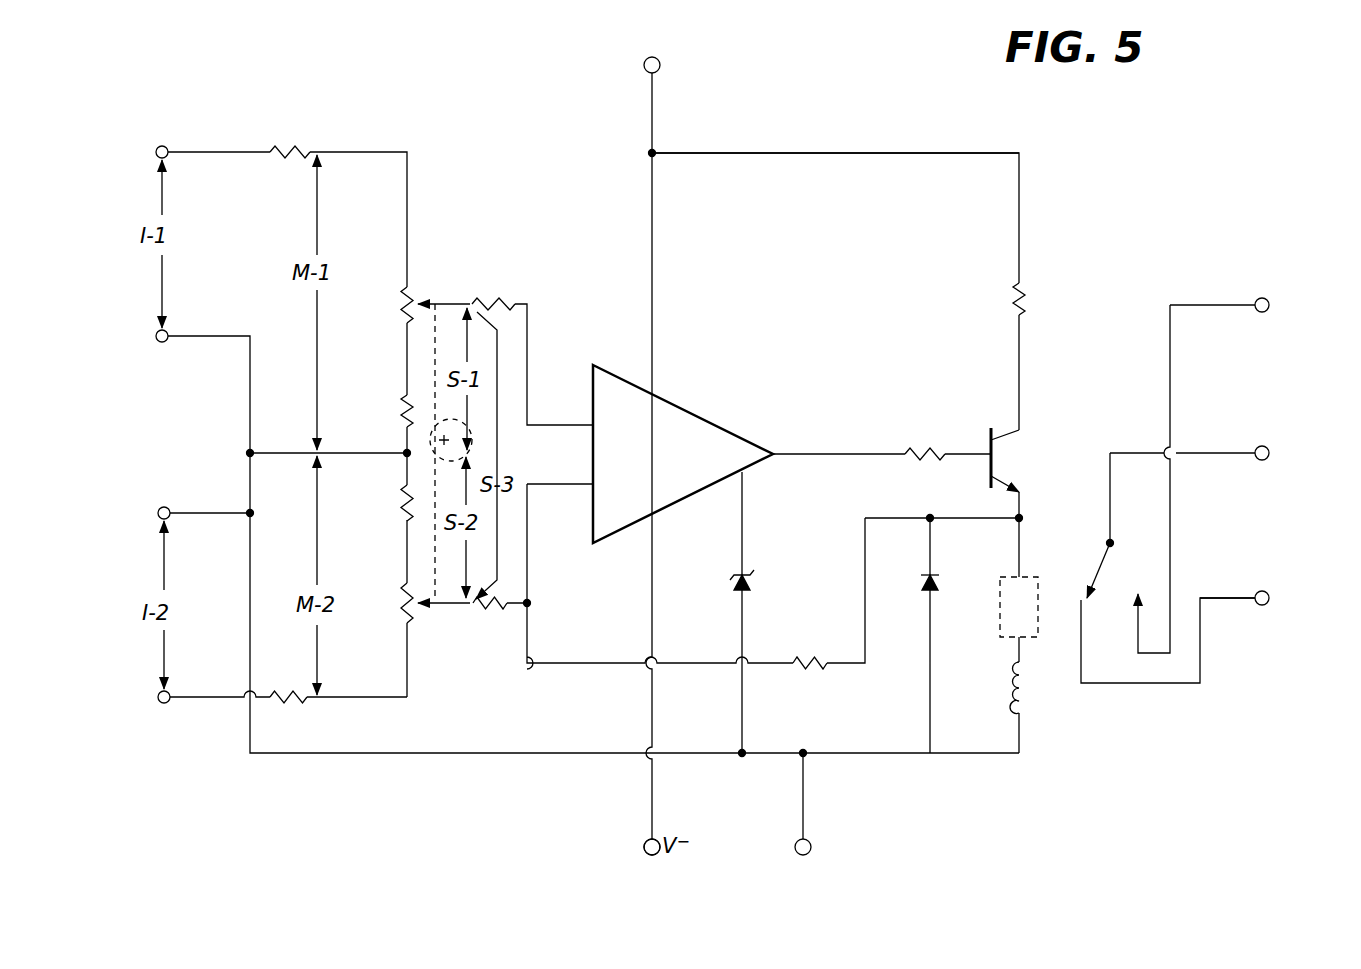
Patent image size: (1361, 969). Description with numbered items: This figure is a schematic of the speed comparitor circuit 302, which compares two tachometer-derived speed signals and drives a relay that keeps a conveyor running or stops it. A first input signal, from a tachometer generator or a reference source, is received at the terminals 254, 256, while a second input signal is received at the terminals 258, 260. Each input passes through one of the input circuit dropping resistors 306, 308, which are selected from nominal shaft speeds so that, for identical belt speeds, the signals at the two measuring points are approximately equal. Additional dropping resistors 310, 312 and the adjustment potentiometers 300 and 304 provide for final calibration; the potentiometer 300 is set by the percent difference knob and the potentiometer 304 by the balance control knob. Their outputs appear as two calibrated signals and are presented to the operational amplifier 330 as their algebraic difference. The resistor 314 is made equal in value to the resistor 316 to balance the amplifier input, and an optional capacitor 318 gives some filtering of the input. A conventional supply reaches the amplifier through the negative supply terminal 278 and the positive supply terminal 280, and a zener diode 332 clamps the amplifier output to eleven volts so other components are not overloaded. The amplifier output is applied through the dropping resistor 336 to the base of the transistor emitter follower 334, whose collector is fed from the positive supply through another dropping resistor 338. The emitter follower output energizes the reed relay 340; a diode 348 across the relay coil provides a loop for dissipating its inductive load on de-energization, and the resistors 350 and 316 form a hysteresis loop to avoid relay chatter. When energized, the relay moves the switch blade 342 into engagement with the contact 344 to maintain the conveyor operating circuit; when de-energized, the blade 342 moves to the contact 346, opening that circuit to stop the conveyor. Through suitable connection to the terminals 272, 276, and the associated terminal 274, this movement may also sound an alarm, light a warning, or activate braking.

The terminal 254 is at (155, 153).
The terminal 256 is at (155, 337).
The terminal 258 is at (157, 514).
The terminal 260 is at (157, 698).
The terminal 272 is at (1269, 306).
The terminal 274 is at (1269, 599).
The terminal 276 is at (1269, 454).
The V− terminal 278 is at (640, 867).
The V+ terminal 280 is at (662, 53).
The potentiometer 300 is at (392, 292).
The speed comparitor circuit 302 is at (811, 134).
The potentiometer 304 is at (393, 600).
The input circuit dropping resistor 306 is at (286, 148).
The input circuit dropping resistor 308 is at (298, 710).
The dropping resistor 310 is at (400, 411).
The dropping resistor 312 is at (402, 499).
The resistor 314 is at (481, 302).
The resistor 316 is at (505, 606).
The capacitor 318 is at (474, 440).
The operational amplifier 330 is at (733, 427).
The zener diode 332 is at (762, 588).
The transistor emitter follower 334 is at (1017, 457).
The dropping resistor 336 is at (952, 424).
The dropping resistor 338 is at (1030, 294).
The reed relay 340 is at (1028, 692).
The switch blade 342 is at (1099, 577).
The contact 344 is at (1080, 592).
The contact 346 is at (1142, 592).
The diode 348 is at (940, 584).
The resistor 350 is at (807, 674).